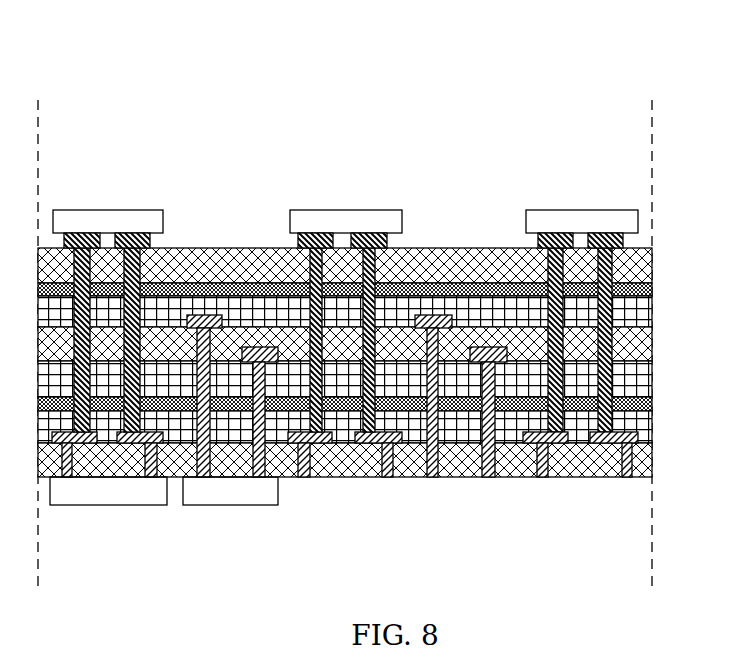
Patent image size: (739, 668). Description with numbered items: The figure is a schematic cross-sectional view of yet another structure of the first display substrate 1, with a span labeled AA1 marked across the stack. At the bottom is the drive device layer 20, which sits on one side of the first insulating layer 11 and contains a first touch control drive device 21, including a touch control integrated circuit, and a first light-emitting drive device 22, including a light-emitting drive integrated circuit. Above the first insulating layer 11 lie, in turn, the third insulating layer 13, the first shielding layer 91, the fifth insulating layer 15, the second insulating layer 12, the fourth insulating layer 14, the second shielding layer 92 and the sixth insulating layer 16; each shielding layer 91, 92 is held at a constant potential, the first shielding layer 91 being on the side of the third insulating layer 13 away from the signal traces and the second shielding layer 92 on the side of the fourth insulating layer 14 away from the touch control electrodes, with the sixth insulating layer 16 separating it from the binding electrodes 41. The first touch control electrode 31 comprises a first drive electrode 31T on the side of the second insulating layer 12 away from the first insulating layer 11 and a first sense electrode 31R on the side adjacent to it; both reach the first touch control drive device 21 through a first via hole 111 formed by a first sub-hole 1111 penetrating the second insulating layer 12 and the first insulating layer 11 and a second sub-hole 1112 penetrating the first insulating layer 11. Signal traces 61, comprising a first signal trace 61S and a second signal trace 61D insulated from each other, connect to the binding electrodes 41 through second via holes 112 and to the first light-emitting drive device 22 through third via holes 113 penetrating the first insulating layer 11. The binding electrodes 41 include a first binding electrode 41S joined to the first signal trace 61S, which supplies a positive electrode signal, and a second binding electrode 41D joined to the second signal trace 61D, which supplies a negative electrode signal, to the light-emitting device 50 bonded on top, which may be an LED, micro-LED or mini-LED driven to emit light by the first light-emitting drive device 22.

The first display substrate 1 is at (142, 98).
The active area AA1 is at (652, 127).
The fourth insulating layer 14 is at (640, 263).
The second shielding layer 92 is at (640, 290).
The sixth insulating layer 16 is at (640, 312).
The second insulating layer 12 is at (640, 345).
The fifth insulating layer 15 is at (640, 376).
The first shielding layer 91 is at (640, 400).
The third insulating layer 13 is at (640, 423).
The first insulating layer 11 is at (640, 463).
The first touch control electrode 31 is at (225, 314).
The first drive electrode 31T is at (201, 318).
The first sense electrode 31R is at (256, 350).
The light-emitting device 50 is at (345, 222).
The binding electrode 41 is at (582, 190).
The first binding electrode 41S is at (555, 222).
The second binding electrode 41D is at (601, 207).
The first light-emitting drive device 22 is at (95, 495).
The first touch control drive device 21 is at (230, 515).
The drive device layer 20 is at (164, 535).
The second via hole 112 is at (315, 400).
The third via hole 113 is at (388, 450).
The first sub-hole 1111 is at (437, 426).
The second sub-hole 1112 is at (492, 426).
The first via hole 111 is at (466, 444).
The first signal trace 61S is at (562, 445).
The second signal trace 61D is at (605, 445).
The signal trace 61 is at (580, 496).